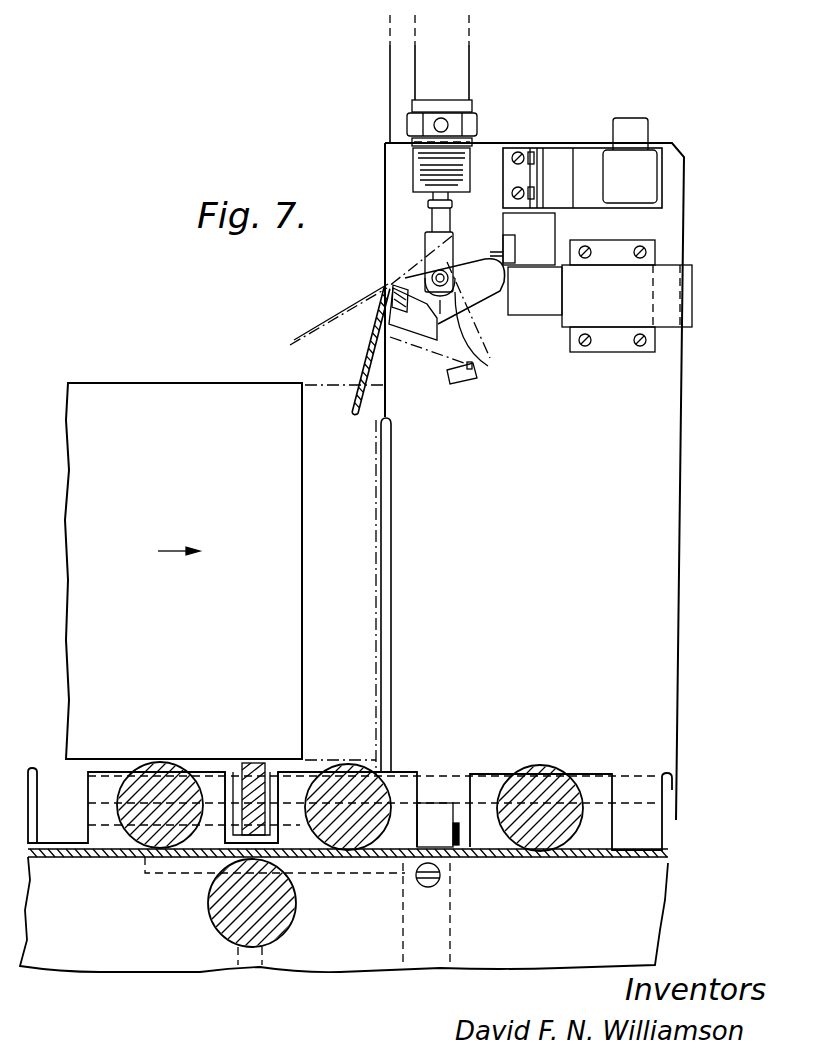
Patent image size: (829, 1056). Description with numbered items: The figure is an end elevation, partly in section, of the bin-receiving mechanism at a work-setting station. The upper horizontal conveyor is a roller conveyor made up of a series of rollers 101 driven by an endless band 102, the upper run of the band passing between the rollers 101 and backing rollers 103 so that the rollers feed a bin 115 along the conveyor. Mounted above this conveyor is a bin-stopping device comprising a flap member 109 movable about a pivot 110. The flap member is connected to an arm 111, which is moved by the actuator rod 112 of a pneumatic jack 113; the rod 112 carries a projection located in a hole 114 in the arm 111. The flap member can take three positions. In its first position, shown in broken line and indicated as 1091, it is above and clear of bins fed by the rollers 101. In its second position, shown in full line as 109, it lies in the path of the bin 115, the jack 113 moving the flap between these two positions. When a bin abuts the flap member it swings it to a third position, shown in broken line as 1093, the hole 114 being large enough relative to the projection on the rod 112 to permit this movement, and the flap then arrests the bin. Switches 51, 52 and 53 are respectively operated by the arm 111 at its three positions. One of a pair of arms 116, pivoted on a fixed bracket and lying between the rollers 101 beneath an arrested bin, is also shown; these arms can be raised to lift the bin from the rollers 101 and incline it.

The pneumatic jack 113 is at (455, 86).
The switch S3 53 is at (500, 243).
The switch S2 52 is at (520, 288).
The actuator rod 112 is at (432, 221).
The pivot 110 is at (386, 288).
The flap member in first position 1091 is at (308, 327).
The flap member 109 is at (363, 372).
The hole 114 is at (487, 361).
The arm 111 is at (475, 293).
The switch S1 51 is at (462, 384).
The flap member in third position 1093 is at (389, 393).
The bin 115 is at (161, 400).
The rollers 101 is at (134, 762).
The arm 116 is at (254, 760).
The endless band 102 is at (112, 857).
The backing rollers 103 is at (210, 912).